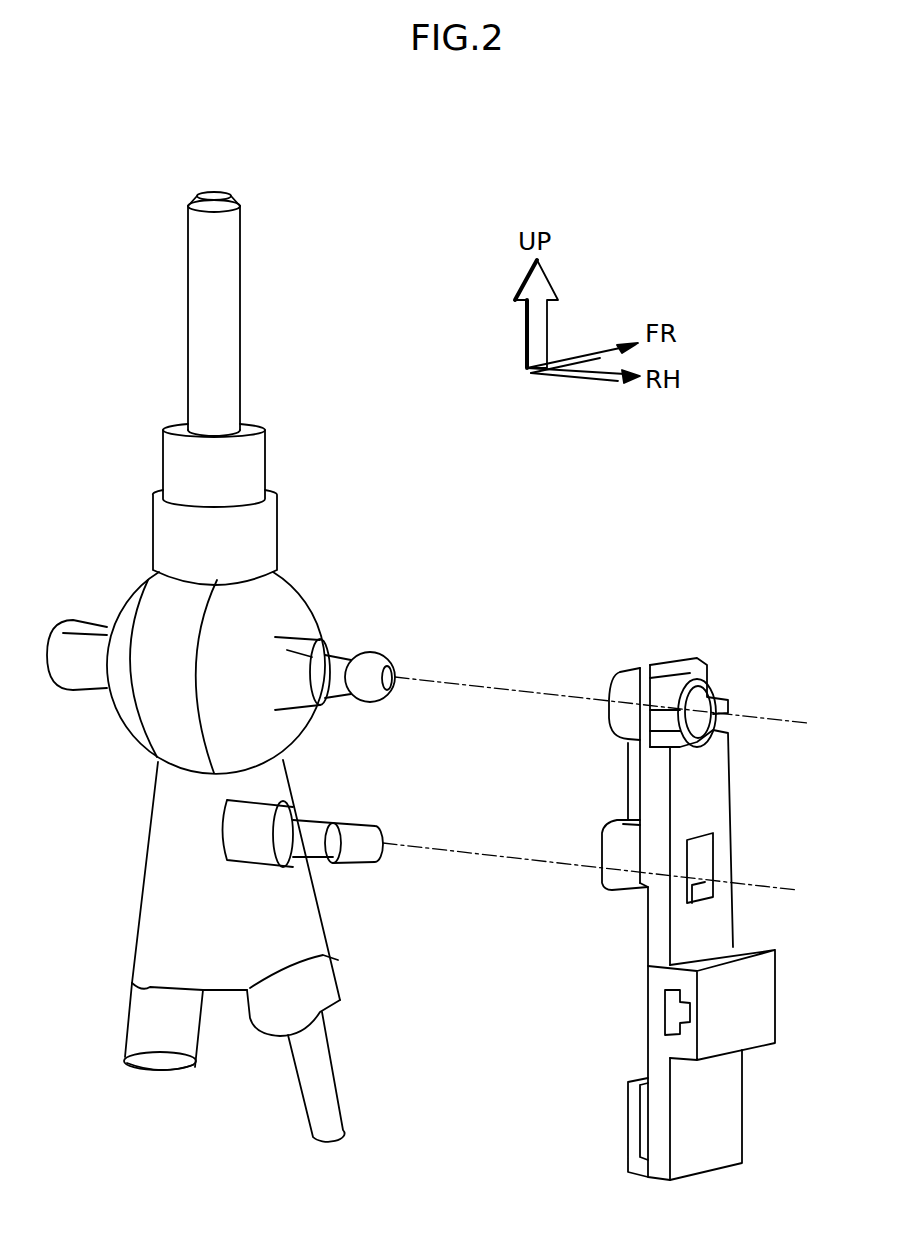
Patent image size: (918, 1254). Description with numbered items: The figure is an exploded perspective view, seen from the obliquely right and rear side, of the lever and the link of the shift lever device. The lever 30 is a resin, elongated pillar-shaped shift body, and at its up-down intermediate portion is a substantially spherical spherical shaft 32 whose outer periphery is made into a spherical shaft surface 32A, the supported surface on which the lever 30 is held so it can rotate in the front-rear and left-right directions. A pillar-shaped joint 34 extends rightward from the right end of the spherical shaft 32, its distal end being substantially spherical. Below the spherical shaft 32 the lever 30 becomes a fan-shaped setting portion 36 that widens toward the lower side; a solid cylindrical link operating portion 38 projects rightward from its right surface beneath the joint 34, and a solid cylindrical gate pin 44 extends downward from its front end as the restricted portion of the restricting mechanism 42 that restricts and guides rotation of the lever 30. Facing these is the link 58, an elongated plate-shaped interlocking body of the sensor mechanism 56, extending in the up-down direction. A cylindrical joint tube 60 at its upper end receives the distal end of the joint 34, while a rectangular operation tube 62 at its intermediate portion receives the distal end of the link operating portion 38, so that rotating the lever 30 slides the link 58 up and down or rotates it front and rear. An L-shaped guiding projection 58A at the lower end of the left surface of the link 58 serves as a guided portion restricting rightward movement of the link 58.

The lever 30 is at (180, 268).
The spherical shaft 32 is at (297, 590).
The shaft surface 32A is at (128, 607).
The joint 34 is at (330, 640).
The setting portion 36 is at (143, 870).
The link operating portion 38 is at (378, 832).
The gate pin 44 is at (333, 1080).
The restricting mechanism 42 is at (369, 1077).
The link 58 is at (704, 909).
The sensor mechanism 56 is at (704, 909).
The joint tube 60 is at (618, 683).
The operation tube 62 is at (608, 830).
The guiding projection 58A is at (628, 1120).